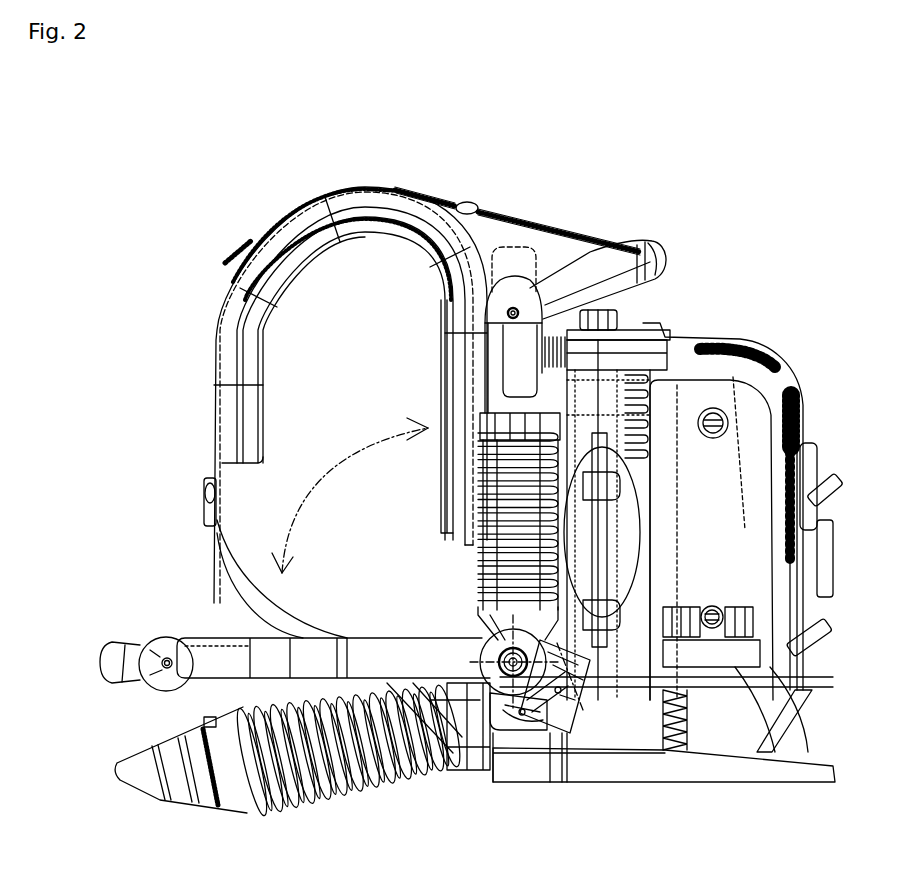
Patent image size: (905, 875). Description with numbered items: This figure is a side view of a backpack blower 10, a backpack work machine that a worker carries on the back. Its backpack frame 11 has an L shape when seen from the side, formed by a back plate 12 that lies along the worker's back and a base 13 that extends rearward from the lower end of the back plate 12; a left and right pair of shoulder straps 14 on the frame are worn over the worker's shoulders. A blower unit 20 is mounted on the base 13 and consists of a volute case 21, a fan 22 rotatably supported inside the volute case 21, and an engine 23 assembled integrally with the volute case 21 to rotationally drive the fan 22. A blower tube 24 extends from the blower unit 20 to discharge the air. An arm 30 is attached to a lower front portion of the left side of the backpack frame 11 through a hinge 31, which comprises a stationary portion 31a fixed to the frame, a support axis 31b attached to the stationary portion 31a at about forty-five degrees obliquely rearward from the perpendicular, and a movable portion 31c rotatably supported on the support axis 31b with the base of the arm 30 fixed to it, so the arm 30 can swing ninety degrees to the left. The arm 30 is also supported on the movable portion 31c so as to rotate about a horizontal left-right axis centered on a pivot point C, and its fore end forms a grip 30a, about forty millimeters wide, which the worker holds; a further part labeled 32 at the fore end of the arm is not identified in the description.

The backpack blower 10 is at (619, 150).
The blower unit 20 is at (712, 253).
The shoulder straps 14 is at (223, 325).
The backpack frame 11 is at (487, 388).
The back plate 12 is at (487, 407).
The volute case 21 is at (620, 372).
The fan 22 is at (672, 355).
The engine 23 is at (745, 380).
The base 13 is at (686, 770).
The blower tube 24 is at (186, 786).
The arm 30 is at (318, 650).
The grip 30a is at (177, 655).
The grip 32 is at (119, 640).
The pivot point C is at (490, 637).
The hinge 31 is at (549, 740).
The stationary portion 31a is at (580, 705).
The support axis 31b is at (572, 730).
The movable portion 31c is at (527, 713).